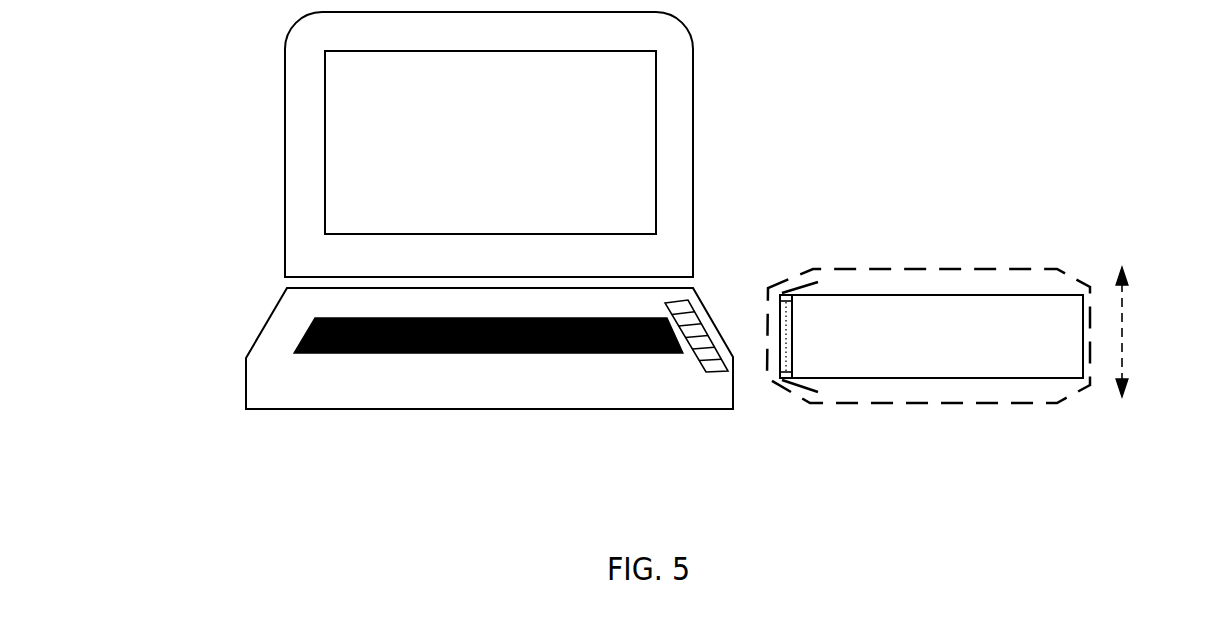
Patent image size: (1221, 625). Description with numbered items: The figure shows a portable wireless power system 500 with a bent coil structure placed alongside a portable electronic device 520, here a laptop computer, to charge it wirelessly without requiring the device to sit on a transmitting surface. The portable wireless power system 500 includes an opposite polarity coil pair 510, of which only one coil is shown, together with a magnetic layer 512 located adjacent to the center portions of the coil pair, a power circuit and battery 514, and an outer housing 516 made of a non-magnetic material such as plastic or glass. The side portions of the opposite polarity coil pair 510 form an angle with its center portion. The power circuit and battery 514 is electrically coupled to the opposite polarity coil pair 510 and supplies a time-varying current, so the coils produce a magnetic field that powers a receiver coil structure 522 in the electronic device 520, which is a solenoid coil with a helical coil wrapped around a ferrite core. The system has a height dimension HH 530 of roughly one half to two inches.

The portable wireless power system 500 is at (1108, 442).
The opposite polarity coil pair 510 is at (800, 390).
The magnetic layer 512 is at (783, 294).
The power circuit and battery 514 is at (985, 378).
The outer housing 516 is at (984, 270).
The portable electronic device 520 is at (693, 117).
The receiver coil structure 522 is at (700, 363).
The height dimension HH 530 is at (1122, 320).